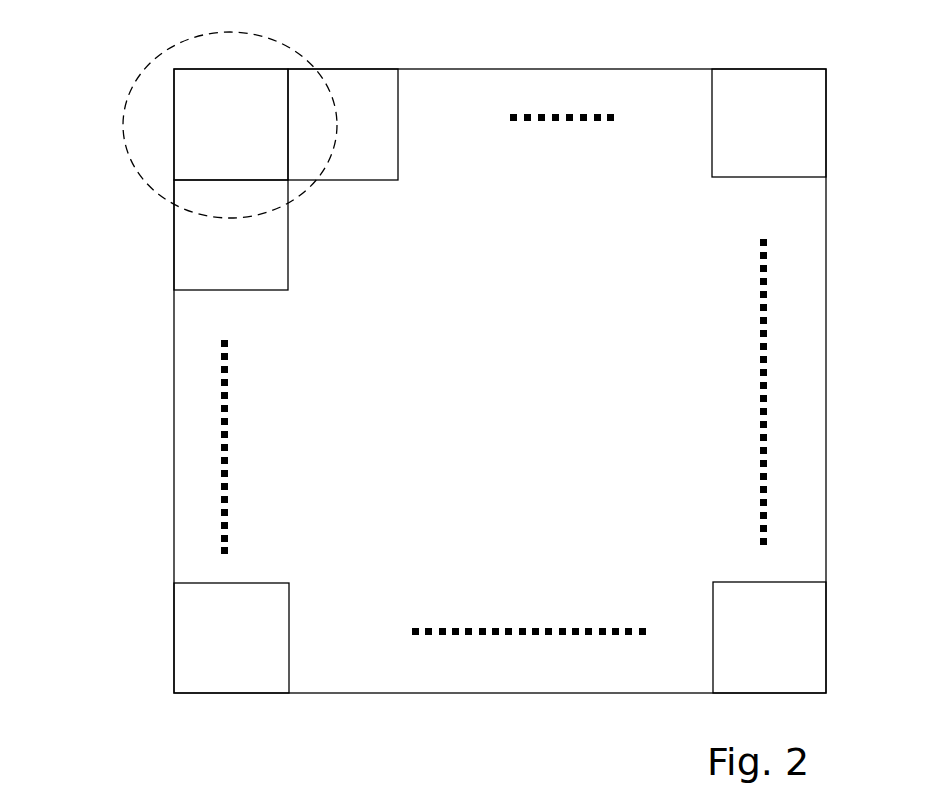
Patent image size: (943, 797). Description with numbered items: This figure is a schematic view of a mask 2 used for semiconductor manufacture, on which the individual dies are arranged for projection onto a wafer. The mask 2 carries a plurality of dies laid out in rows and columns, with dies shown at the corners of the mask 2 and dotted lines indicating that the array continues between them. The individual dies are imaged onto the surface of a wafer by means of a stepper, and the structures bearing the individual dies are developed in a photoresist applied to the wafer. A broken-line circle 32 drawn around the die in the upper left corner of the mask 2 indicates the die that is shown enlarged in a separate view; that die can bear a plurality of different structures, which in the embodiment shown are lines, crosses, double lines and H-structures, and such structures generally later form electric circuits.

The mask 2 is at (518, 379).
The broken-line circle 32 is at (132, 163).